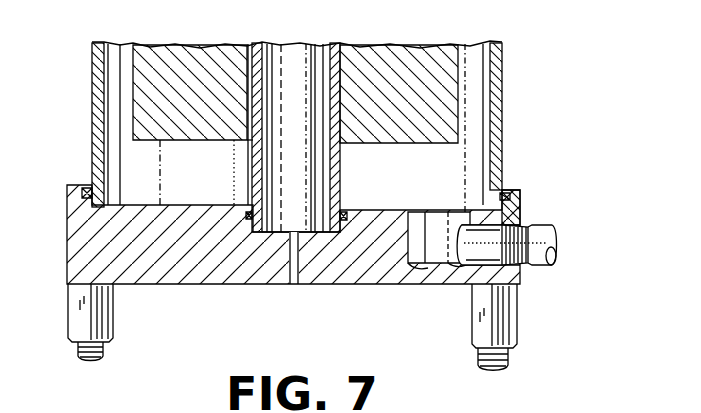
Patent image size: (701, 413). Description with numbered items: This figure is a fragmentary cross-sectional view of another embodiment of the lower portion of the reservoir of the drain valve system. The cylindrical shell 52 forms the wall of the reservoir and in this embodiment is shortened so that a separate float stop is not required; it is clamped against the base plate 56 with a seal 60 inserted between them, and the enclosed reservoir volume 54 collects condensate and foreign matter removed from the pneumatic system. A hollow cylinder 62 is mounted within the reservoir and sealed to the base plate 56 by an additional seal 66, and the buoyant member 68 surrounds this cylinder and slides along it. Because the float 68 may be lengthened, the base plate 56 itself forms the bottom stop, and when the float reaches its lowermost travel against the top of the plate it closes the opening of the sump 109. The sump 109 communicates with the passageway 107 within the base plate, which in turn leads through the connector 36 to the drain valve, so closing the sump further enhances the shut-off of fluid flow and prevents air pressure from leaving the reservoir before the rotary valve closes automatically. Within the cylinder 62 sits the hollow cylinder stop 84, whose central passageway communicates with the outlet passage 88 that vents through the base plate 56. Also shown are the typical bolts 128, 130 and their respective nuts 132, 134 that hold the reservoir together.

The inlet line connector 36 is at (548, 224).
The cylindrical shell 52 is at (92, 111).
The reservoir volume 54 is at (118, 75).
The base plate 56 is at (200, 284).
The seal 60 is at (84, 190).
The hollow cylinder 62 is at (250, 164).
The seal 66 is at (347, 208).
The buoyant member 68 is at (185, 143).
The hollow cylinder stop 84 is at (327, 165).
The outlet passage 88 is at (302, 284).
The passageway 107 is at (474, 212).
The sump 109 is at (426, 212).
The bolt 128 is at (103, 350).
The bolt 130 is at (508, 360).
The nut 132 is at (113, 318).
The nut 134 is at (517, 321).